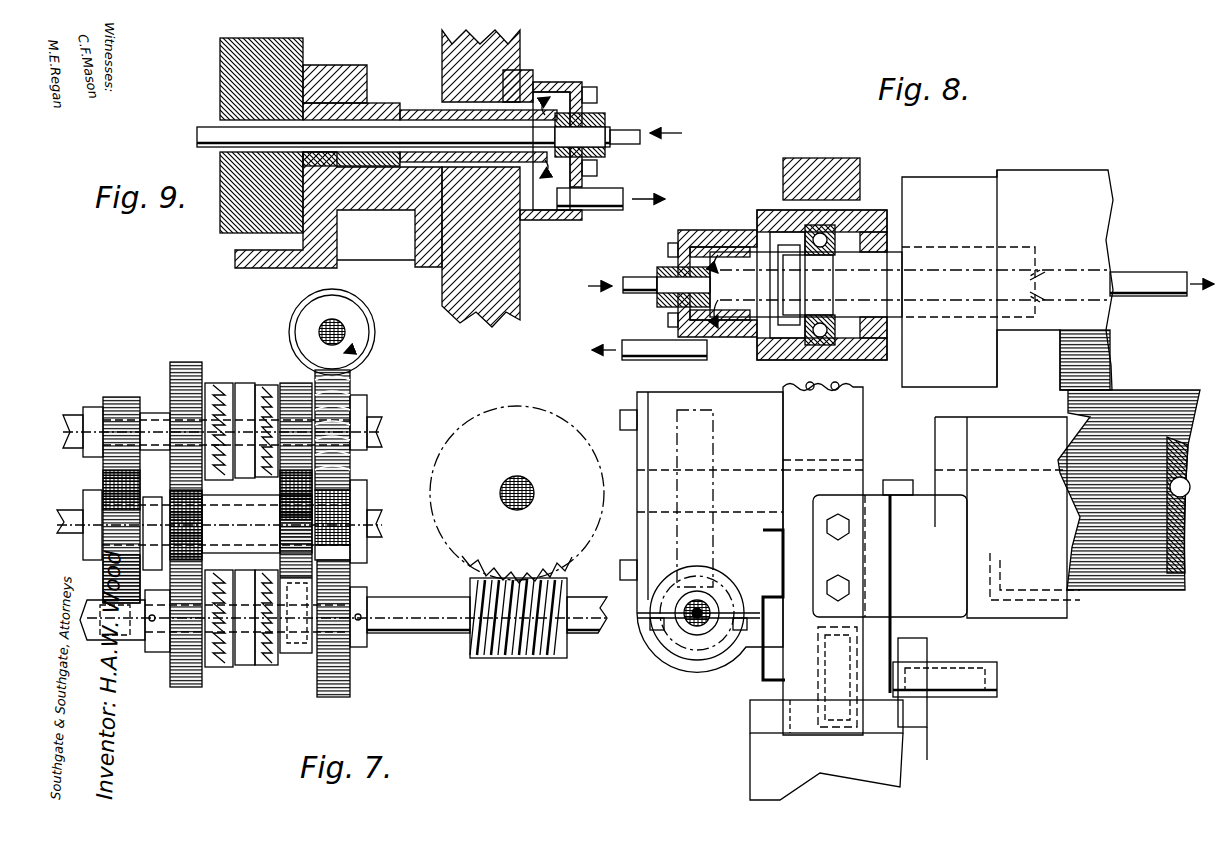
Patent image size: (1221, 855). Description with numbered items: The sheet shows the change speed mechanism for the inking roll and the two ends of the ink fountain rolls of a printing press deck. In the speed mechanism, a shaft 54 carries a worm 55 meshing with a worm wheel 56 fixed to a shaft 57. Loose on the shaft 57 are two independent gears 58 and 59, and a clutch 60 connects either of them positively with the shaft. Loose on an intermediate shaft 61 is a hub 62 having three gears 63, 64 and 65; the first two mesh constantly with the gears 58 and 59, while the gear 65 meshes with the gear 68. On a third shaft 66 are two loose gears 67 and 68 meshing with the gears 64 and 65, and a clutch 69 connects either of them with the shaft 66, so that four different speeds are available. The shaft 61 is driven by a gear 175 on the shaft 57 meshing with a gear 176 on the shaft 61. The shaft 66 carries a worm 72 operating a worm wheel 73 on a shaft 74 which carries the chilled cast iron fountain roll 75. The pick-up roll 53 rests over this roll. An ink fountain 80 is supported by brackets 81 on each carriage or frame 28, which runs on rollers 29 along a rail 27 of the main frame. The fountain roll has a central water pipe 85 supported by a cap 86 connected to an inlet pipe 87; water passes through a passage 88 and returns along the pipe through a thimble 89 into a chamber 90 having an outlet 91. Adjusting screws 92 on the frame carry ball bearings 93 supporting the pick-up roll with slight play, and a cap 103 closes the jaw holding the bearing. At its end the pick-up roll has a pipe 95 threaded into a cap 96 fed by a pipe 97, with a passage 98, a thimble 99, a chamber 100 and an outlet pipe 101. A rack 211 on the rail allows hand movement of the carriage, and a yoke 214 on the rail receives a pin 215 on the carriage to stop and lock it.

In FIG. 8, the rail 27 is at (750, 755).
In FIG. 9, the carriage or frame 28 is at (500, 322).
In FIG. 8, the carriage or frame 28 is at (797, 745).
In FIG. 8, the rollers 29 is at (840, 730).
In FIG. 8, the pick-up roll 53 is at (1052, 163).
In FIG. 7, the shaft 54 is at (338, 328).
In FIG. 7, the worm 55 is at (374, 322).
In FIG. 7, the worm wheel 56 is at (352, 388).
In FIG. 7, the shaft 57 is at (66, 442).
In FIG. 7, the gear 58 is at (290, 384).
In FIG. 7, the gear 59 is at (186, 362).
In FIG. 7, the clutch 60 is at (238, 384).
In FIG. 7, the intermediate shaft 61 is at (70, 512).
In FIG. 7, the hub 62 is at (243, 478).
In FIG. 7, the gear 63 is at (279, 524).
In FIG. 7, the gear 64 is at (241, 524).
In FIG. 7, the gear 65 is at (352, 508).
In FIG. 7, the third shaft 66 is at (414, 630).
In FIG. 8, the third shaft 66 is at (686, 628).
In FIG. 7, the gear 67 is at (170, 683).
In FIG. 7, the gear 68 is at (320, 694).
In FIG. 7, the clutch 69 is at (247, 665).
In FIG. 7, the worm 72 is at (480, 660).
In FIG. 8, the worm 72 is at (697, 662).
In FIG. 7, the worm wheel 73 is at (482, 570).
In FIG. 8, the worm wheel 73 is at (712, 440).
In FIG. 7, the shaft 74 is at (534, 496).
In FIG. 8, the shaft 74 is at (745, 515).
In FIG. 9, the fountain roll 75 is at (222, 52).
In FIG. 8, the fountain roll 75 is at (1118, 590).
In FIG. 9, the ink fountain 80 is at (240, 256).
In FIG. 8, the ink fountain 80 is at (1060, 620).
In FIG. 8, the brackets 81 is at (878, 577).
In FIG. 9, the pipe 85 is at (198, 136).
In FIG. 9, the cap 86 is at (596, 112).
In FIG. 9, the inlet pipe 87 is at (630, 128).
In FIG. 9, the passage 88 is at (385, 104).
In FIG. 9, the thimble 89 is at (414, 110).
In FIG. 9, the chamber 90 is at (558, 90).
In FIG. 9, the outlet 91 is at (590, 211).
In FIG. 8, the adjusting screws 92 is at (833, 386).
In FIG. 8, the ball bearings 93 is at (860, 212).
In FIG. 8, the pipe 95 is at (745, 262).
In FIG. 8, the cap 96 is at (680, 236).
In FIG. 8, the pipe 97 is at (648, 276).
In FIG. 8, the passage 98 is at (1102, 296).
In FIG. 8, the thimble 99 is at (769, 231).
In FIG. 8, the chamber 100 is at (705, 246).
In FIG. 8, the outlet pipe 101 is at (636, 358).
In FIG. 8, the cap 103 is at (822, 152).
In FIG. 7, the gear 175 is at (125, 398).
In FIG. 7, the gear 176 is at (108, 578).
In FIG. 8, the rack 211 is at (930, 754).
In FIG. 8, the yoke 214 is at (928, 646).
In FIG. 8, the pin 215 is at (972, 700).